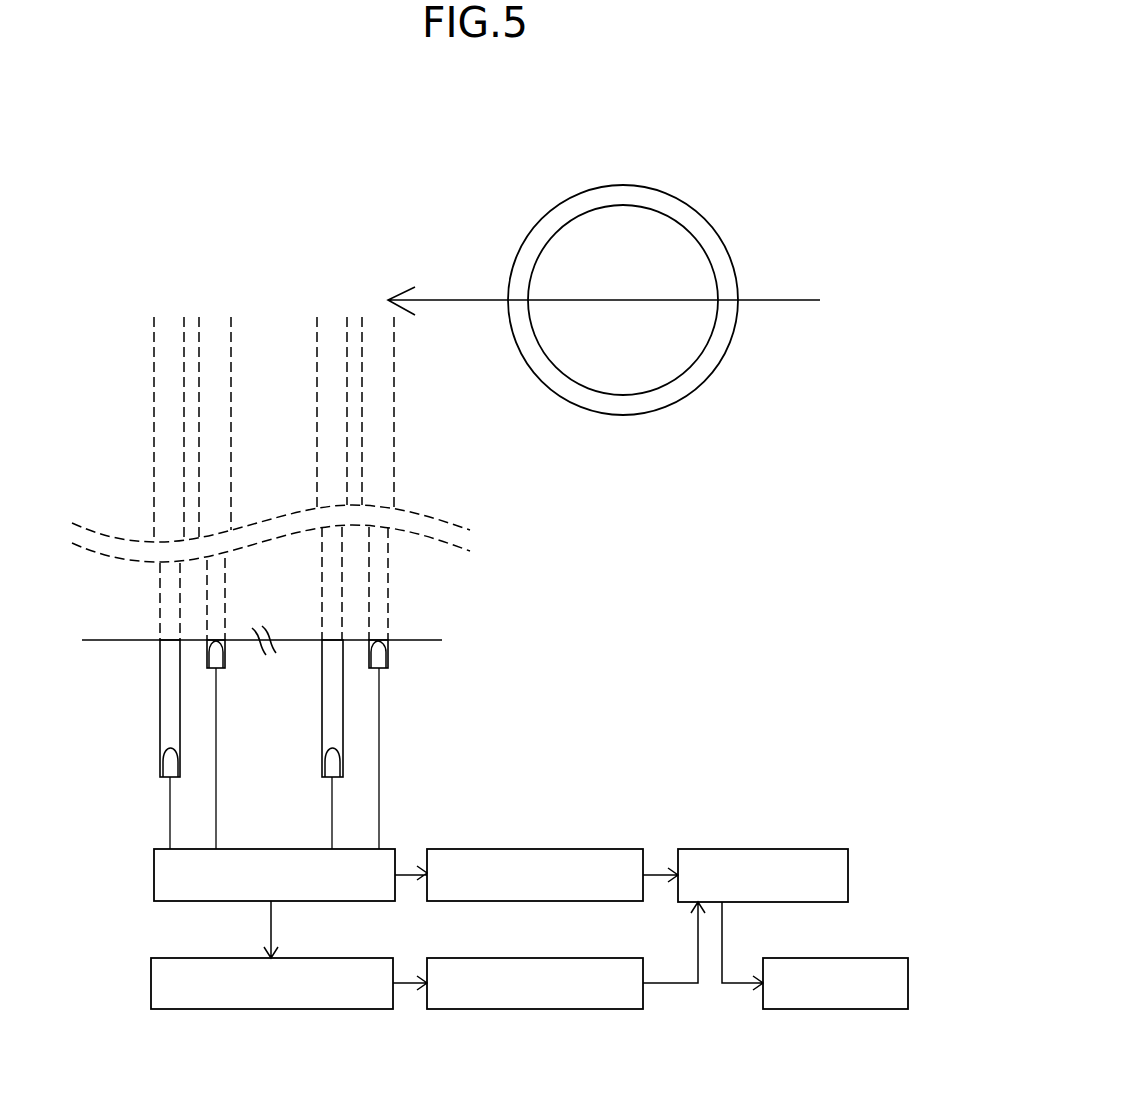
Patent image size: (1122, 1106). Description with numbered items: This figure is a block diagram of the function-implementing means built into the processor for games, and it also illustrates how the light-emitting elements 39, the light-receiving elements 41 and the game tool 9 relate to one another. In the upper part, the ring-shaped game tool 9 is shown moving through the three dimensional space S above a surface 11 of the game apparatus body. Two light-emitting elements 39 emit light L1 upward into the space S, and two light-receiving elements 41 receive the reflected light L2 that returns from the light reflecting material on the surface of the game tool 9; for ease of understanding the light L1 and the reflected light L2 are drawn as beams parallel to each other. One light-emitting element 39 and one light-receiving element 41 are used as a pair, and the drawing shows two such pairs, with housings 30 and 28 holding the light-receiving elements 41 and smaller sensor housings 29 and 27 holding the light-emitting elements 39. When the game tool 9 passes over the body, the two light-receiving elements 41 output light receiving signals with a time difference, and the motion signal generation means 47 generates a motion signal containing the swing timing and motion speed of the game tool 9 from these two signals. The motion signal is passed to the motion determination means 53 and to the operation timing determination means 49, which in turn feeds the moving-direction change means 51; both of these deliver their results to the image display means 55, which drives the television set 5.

The television set 5 is at (845, 958).
The game tool 9 is at (673, 197).
The surface 11 is at (95, 640).
The light receiving sensor 27 is at (386, 643).
The light emitting element housing 28 is at (343, 723).
The light receiving sensor 29 is at (222, 643).
The light emitting element housing 30 is at (160, 700).
The light-emitting element 39 is at (216, 657).
The light-receiving element 41 is at (162, 766).
The motion signal generation means 47 is at (387, 849).
The operation timing determination means 49 is at (297, 958).
The moving-direction change means 51 is at (572, 958).
The motion determination means 53 is at (572, 849).
The image display means 55 is at (805, 849).
The three dimensional space S is at (207, 268).
The light L1 is at (394, 428).
The reflected light L2 is at (154, 357).